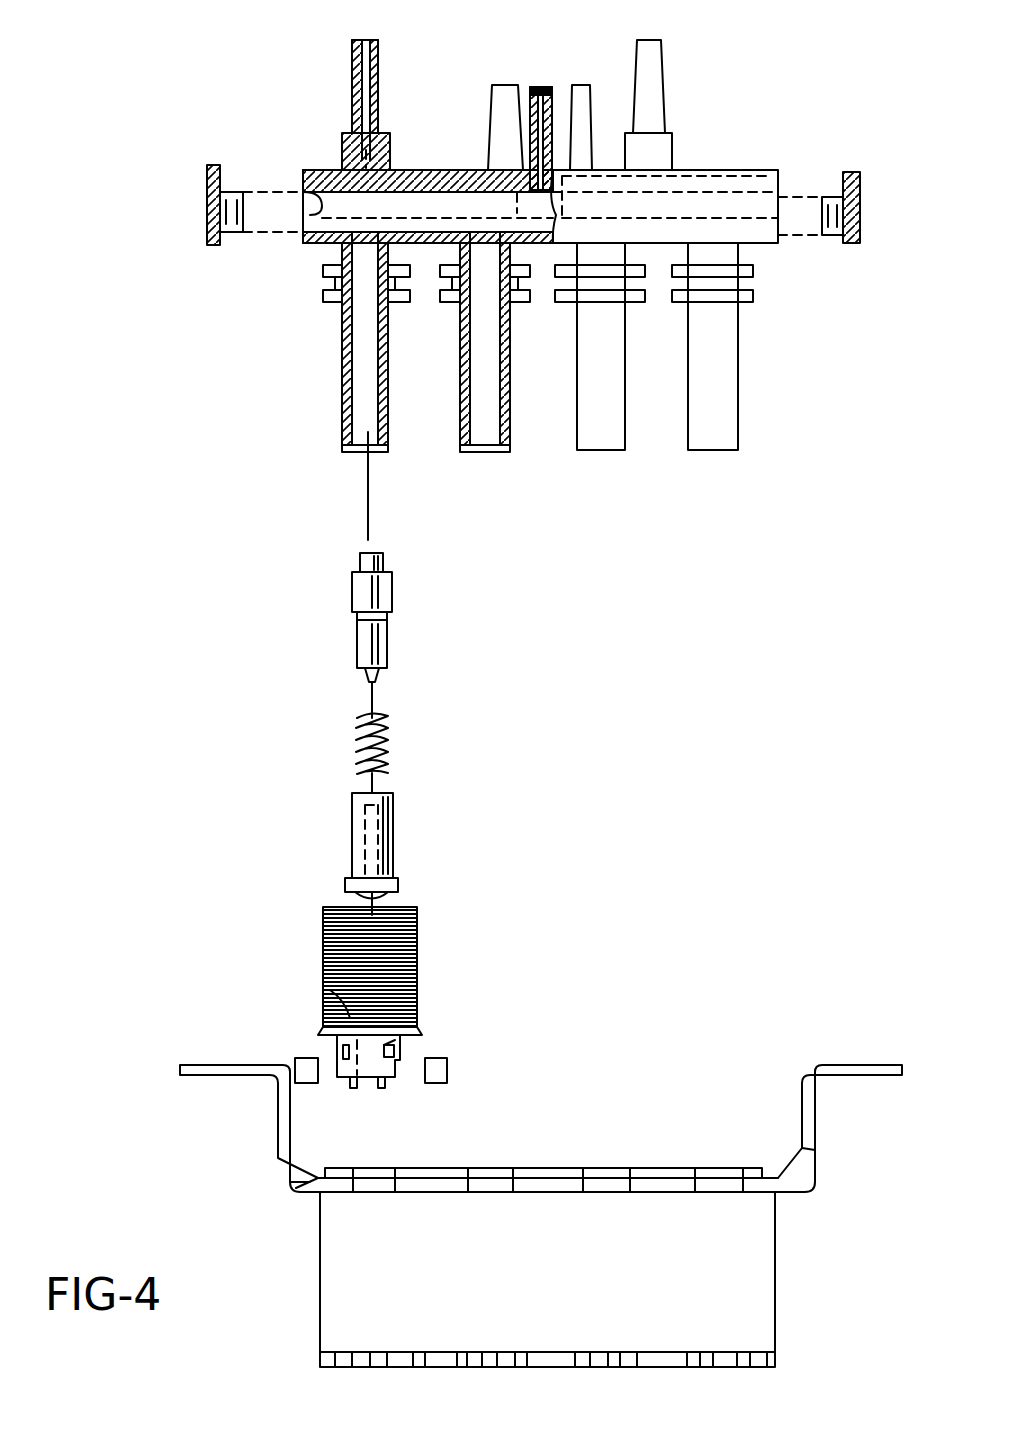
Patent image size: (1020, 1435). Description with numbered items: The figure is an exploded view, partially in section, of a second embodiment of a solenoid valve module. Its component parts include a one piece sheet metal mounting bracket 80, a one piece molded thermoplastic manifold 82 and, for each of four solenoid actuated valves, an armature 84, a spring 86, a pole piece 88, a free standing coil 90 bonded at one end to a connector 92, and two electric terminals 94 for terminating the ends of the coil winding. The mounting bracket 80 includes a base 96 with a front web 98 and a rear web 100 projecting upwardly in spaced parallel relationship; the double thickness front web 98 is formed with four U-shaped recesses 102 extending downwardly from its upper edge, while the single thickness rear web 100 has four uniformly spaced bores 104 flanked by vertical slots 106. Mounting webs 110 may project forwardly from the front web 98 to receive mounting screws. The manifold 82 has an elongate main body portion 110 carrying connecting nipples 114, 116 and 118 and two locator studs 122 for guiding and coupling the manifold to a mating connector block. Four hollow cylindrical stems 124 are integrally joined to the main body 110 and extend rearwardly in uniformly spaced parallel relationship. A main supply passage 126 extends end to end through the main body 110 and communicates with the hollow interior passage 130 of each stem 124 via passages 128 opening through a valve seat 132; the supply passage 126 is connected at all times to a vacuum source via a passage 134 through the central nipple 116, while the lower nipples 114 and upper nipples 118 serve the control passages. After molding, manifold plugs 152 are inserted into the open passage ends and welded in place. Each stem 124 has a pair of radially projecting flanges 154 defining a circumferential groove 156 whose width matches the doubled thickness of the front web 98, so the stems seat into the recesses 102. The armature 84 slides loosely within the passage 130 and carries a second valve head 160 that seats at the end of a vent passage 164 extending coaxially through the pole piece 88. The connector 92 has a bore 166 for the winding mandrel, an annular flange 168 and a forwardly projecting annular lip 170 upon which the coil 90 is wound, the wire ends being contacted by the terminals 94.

The mounting bracket 80 is at (850, 1258).
The manifold 82 is at (767, 190).
The armature 84 is at (352, 590).
The spring 86 is at (355, 745).
The pole piece 88 is at (352, 845).
The free standing coil 90 is at (323, 940).
The connector 92 is at (333, 1053).
The electric terminals 94 is at (447, 1068).
The base 96 is at (637, 1262).
The front web 98 is at (540, 1175).
The rear web 100 is at (540, 1352).
The U-shaped recesses 102 is at (360, 1173).
The bores 104 is at (385, 1358).
The vertical slots 106 is at (345, 1353).
The main body portion 110 is at (448, 170).
The lower nipples 114 is at (490, 97).
The central nipple 116 is at (530, 108).
The upper nipples 118 is at (612, 85).
The locator studs 122 is at (352, 50).
The hollow cylindrical stems 124 is at (388, 404).
The main supply passage 126 is at (322, 200).
The passages 128 is at (350, 315).
The interior passage 130 is at (375, 445).
The valve seat 132 is at (255, 262).
The passage 134 is at (539, 87).
The manifold plugs 152 is at (207, 244).
The flanges 154 is at (326, 270).
The circumferential groove 156 is at (328, 284).
The second valve head 160 is at (365, 678).
The vent passage 164 is at (375, 835).
The bore 166 is at (403, 1048).
The annular flange 168 is at (333, 1037).
The annular lip 170 is at (348, 1018).